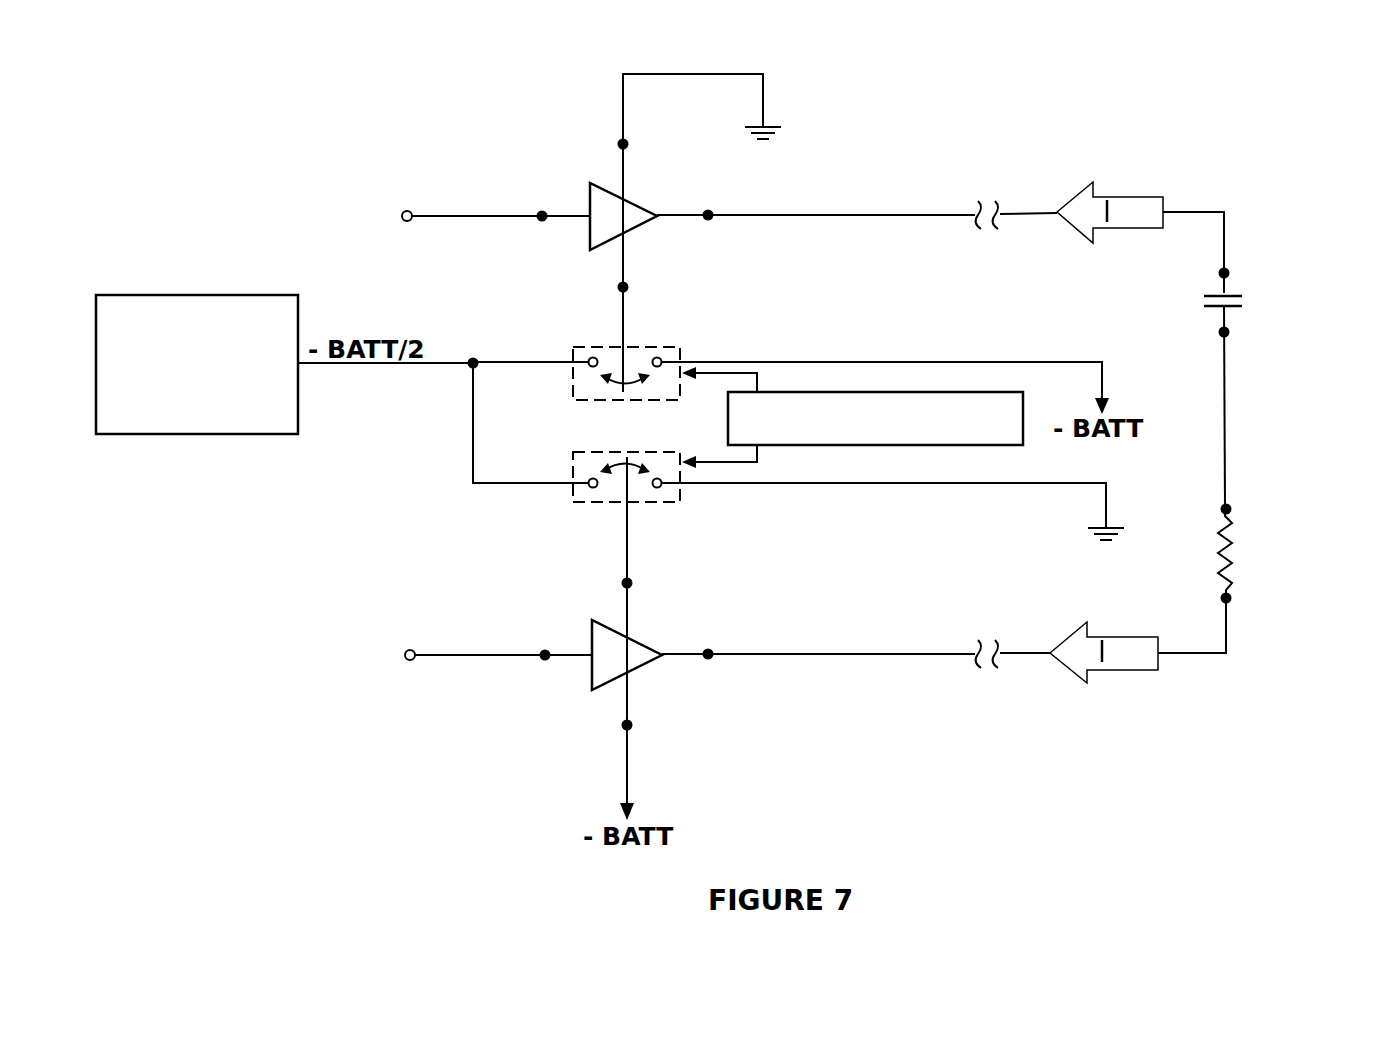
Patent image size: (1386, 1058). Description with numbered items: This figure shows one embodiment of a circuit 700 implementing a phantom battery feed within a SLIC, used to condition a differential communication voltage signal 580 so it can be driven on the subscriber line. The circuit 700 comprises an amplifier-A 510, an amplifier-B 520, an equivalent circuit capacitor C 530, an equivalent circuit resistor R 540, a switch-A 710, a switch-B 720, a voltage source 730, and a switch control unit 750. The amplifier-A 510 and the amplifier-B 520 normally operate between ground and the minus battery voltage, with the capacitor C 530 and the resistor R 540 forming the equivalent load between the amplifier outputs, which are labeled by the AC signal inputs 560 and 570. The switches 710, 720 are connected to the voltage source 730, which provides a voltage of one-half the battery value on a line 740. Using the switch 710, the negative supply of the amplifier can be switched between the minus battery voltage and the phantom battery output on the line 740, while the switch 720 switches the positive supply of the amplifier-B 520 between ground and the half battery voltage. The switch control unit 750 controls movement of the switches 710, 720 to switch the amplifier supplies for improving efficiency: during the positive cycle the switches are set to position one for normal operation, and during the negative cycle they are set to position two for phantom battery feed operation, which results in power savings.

The circuit 700 is at (215, 114).
The amplifier-A 510 is at (597, 183).
The amplifier-B 520 is at (600, 690).
The capacitor C 530 is at (1230, 295).
The resistor R 540 is at (1230, 542).
The AC_2 signal input 560 is at (1152, 195).
The AC_1 signal input 570 is at (1118, 672).
The differential communication voltage signal 580 is at (410, 222).
The switch-A 710 is at (677, 350).
The switch-B 720 is at (650, 503).
The voltage source 730 is at (213, 436).
The line 740 is at (318, 365).
The switch control unit 750 is at (943, 390).